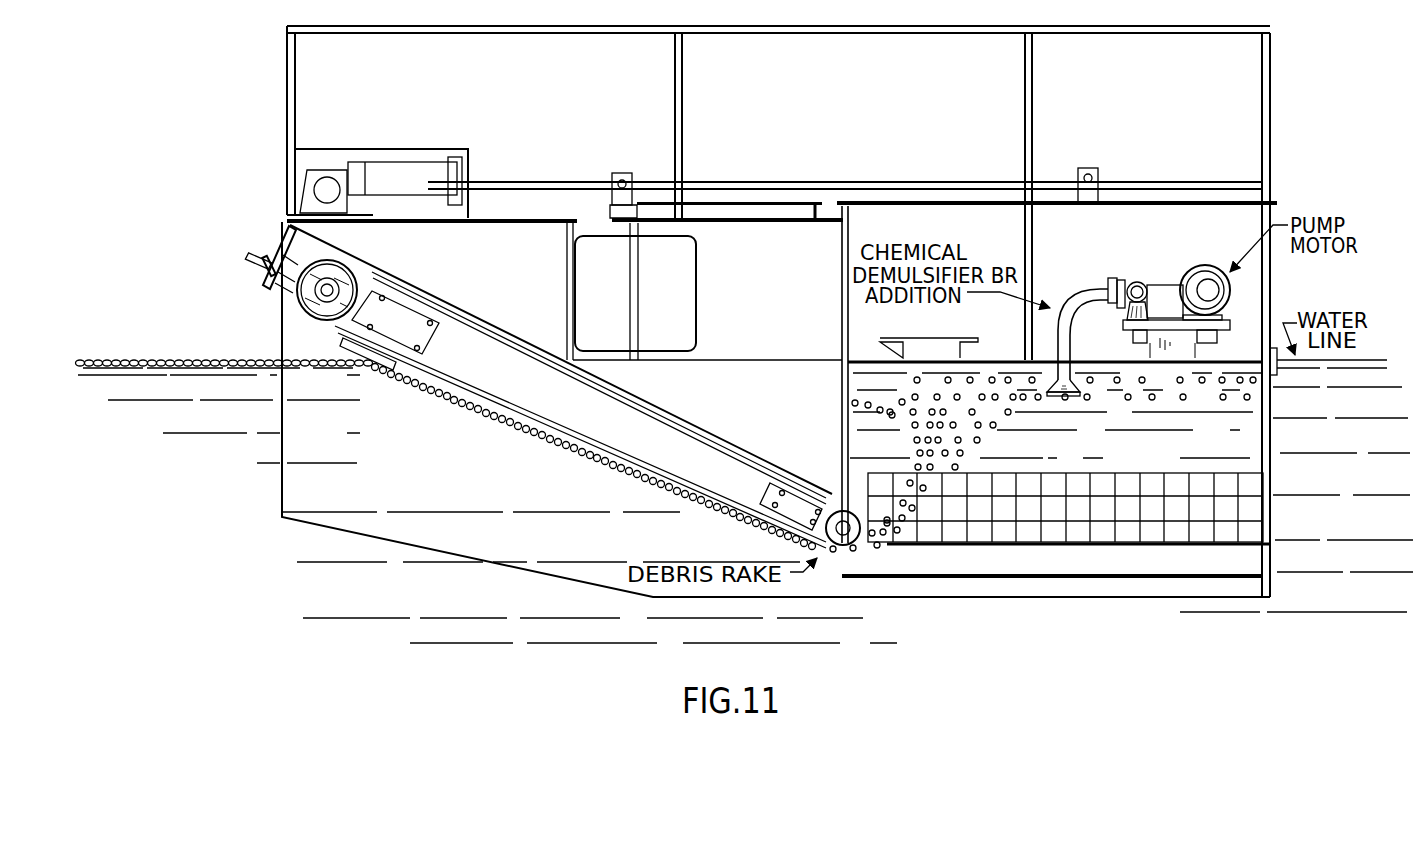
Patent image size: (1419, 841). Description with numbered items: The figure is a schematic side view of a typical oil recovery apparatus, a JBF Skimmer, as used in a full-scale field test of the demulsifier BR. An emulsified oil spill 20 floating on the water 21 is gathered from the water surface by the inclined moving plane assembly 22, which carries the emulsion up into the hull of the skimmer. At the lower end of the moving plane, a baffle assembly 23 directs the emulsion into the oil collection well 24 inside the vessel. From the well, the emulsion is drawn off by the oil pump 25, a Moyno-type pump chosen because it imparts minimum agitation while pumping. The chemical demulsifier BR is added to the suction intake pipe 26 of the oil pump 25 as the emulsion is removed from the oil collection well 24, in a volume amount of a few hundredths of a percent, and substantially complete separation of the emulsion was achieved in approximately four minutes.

The emulsified oil spill 20 is at (215, 288).
The water 21 is at (195, 429).
The moving plane assembly 22 is at (387, 357).
The baffle assembly 23 is at (895, 555).
The oil collection well 24 is at (912, 410).
The oil pump 25 is at (1143, 275).
The suction intake pipe 26 is at (1070, 335).